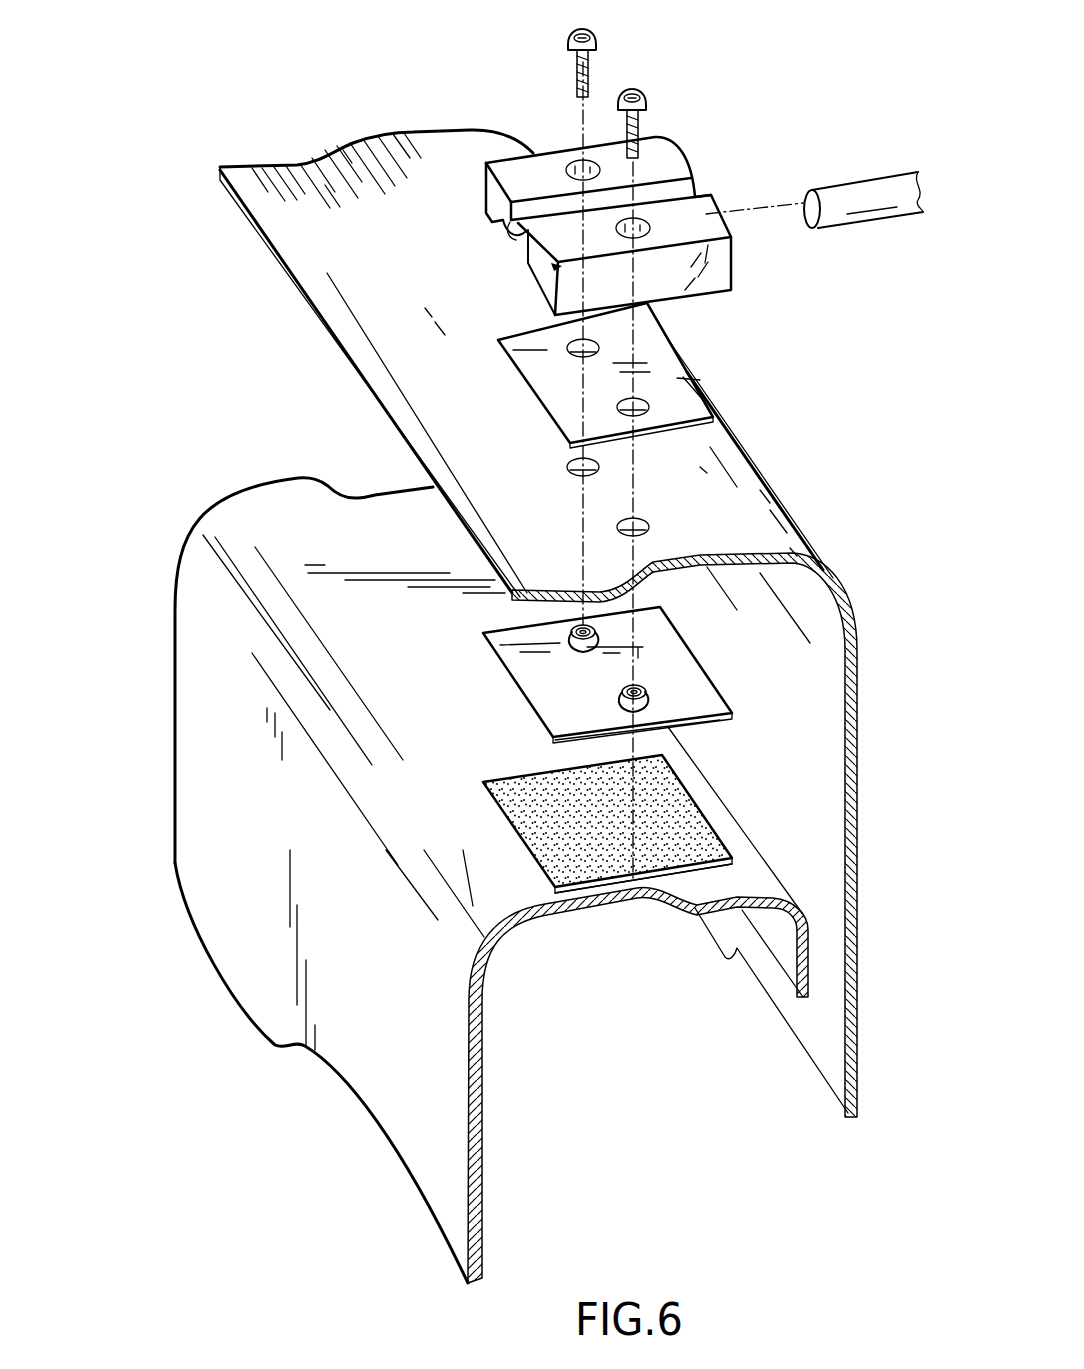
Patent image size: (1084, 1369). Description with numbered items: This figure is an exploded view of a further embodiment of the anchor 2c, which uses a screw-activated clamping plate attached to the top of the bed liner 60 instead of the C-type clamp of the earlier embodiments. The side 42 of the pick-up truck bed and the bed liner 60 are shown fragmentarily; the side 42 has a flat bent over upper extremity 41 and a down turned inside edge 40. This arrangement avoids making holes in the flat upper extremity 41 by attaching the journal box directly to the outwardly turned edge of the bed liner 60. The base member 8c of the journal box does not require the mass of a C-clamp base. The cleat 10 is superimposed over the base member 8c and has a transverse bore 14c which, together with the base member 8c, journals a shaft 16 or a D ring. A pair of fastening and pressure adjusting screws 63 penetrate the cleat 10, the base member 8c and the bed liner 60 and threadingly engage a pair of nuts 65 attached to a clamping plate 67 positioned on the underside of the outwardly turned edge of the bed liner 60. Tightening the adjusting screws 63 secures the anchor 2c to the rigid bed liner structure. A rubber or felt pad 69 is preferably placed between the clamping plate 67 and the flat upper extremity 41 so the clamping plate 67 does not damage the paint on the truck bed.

The anchor 2c is at (760, 365).
The base member 8c is at (700, 407).
The cleat 10 is at (697, 213).
The transverse bore 14c is at (513, 235).
The shaft 16 is at (866, 192).
The down turned inside edge 40 is at (810, 975).
The flat bent over upper extremity 41 is at (738, 893).
The side 42 is at (422, 1049).
The bed liner 60 is at (742, 497).
The fastening and pressure adjusting screws 63 is at (592, 70).
The nuts 65 is at (578, 643).
The clamping plate 67 is at (707, 697).
The pad 69 is at (703, 840).